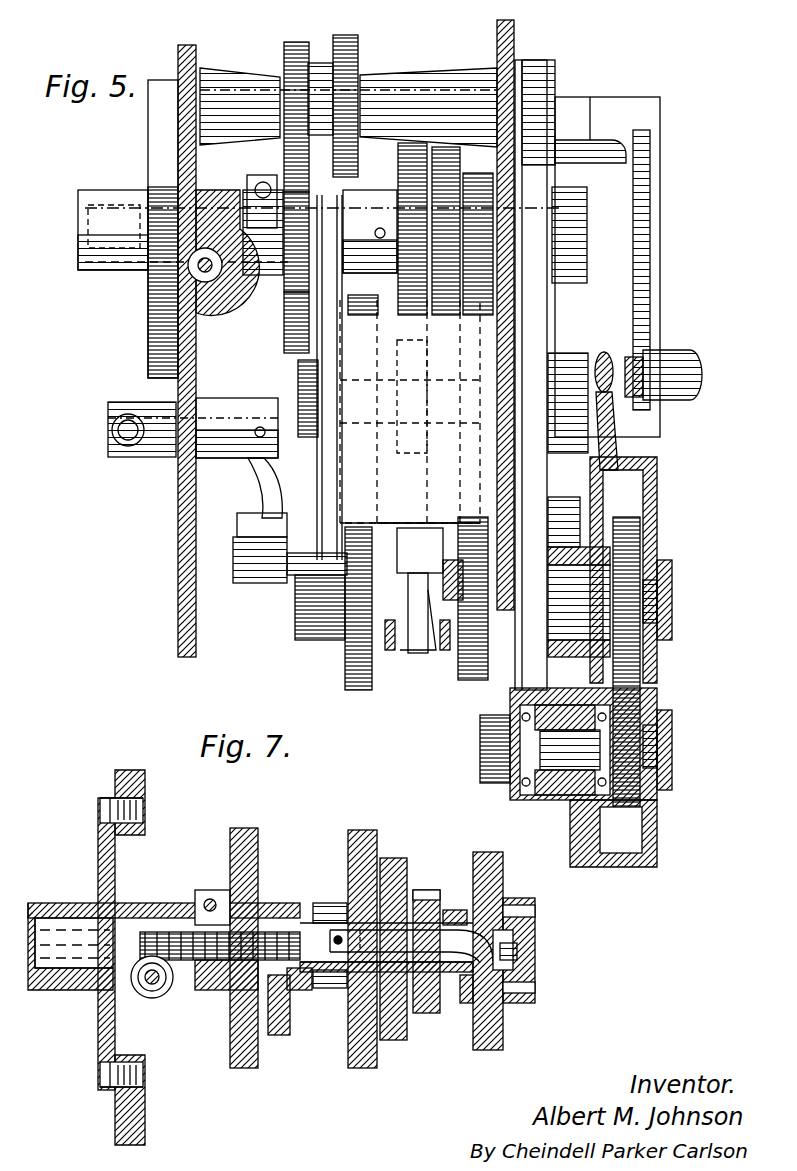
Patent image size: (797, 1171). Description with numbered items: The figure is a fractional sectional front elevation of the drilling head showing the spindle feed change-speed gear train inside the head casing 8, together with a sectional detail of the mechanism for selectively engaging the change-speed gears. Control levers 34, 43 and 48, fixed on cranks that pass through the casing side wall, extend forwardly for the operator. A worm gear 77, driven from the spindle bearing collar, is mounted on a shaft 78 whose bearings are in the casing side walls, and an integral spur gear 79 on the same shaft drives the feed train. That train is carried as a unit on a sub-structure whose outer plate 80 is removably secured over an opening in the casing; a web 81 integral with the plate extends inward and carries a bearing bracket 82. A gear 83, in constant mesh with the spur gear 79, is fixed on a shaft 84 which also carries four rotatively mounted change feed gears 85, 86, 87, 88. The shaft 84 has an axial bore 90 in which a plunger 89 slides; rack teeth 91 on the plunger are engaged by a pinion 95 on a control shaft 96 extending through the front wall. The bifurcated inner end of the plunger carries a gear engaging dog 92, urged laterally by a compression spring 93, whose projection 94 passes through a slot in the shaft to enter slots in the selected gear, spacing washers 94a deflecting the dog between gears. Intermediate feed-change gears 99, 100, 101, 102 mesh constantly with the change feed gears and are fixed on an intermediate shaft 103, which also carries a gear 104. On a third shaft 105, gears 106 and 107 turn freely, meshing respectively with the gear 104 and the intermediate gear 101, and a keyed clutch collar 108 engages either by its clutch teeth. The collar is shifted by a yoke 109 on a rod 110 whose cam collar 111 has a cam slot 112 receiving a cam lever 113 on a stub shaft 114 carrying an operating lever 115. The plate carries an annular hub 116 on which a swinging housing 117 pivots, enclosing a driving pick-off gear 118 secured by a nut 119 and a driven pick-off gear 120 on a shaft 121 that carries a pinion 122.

In FIG. 5, the head casing 8 is at (180, 54).
In FIG. 7, the head casing 8 is at (98, 861).
In FIG. 5, the control lever 34 is at (650, 256).
In FIG. 5, the control lever 43 is at (702, 372).
In FIG. 5, the control lever 48 is at (605, 352).
In FIG. 5, the worm gear 77 is at (359, 50).
In FIG. 5, the shaft 78 is at (229, 75).
In FIG. 5, the spur gear 79 is at (295, 42).
In FIG. 5, the plate 80 is at (542, 233).
In FIG. 7, the plate 80 is at (503, 1040).
In FIG. 5, the web 81 is at (350, 328).
In FIG. 5, the bearing bracket 82 is at (300, 306).
In FIG. 7, the bearing bracket 82 is at (280, 1035).
In FIG. 5, the gear 83 is at (285, 345).
In FIG. 7, the gear 83 is at (258, 830).
In FIG. 5, the shaft 84 is at (375, 215).
In FIG. 7, the shaft 84 is at (305, 988).
In FIG. 5, the change feed gear 85 is at (410, 150).
In FIG. 7, the change feed gear 85 is at (363, 832).
In FIG. 5, the change feed gear 86 is at (445, 155).
In FIG. 7, the change feed gear 86 is at (395, 860).
In FIG. 5, the change feed gear 87 is at (512, 150).
In FIG. 7, the change feed gear 87 is at (424, 892).
In FIG. 5, the change feed gear 88 is at (580, 182).
In FIG. 7, the change feed gear 88 is at (455, 1000).
In FIG. 5, the plunger 89 is at (116, 205).
In FIG. 7, the plunger 89 is at (292, 905).
In FIG. 7, the bore 90 is at (218, 985).
In FIG. 7, the rack teeth 91 is at (165, 932).
In FIG. 7, the gear engaging dog 92 is at (400, 985).
In FIG. 7, the compression spring 93 is at (322, 928).
In FIG. 7, the gear engaging projection 94 is at (455, 910).
In FIG. 7, the spacing washers 94a is at (412, 910).
In FIG. 7, the pinion 95 is at (156, 998).
In FIG. 5, the control shaft 96 is at (200, 268).
In FIG. 7, the control shaft 96 is at (150, 977).
In FIG. 5, the intermediate feed-change gear 99 is at (406, 472).
In FIG. 5, the intermediate feed-change gear 100 is at (407, 515).
In FIG. 5, the intermediate feed-change gear 101 is at (470, 500).
In FIG. 5, the intermediate feed-change gear 102 is at (528, 505).
In FIG. 5, the intermediate shaft 103 is at (304, 388).
In FIG. 5, the gear 104 is at (365, 478).
In FIG. 5, the third shaft 105 is at (310, 615).
In FIG. 5, the gear 106 is at (350, 690).
In FIG. 5, the gear 107 is at (470, 680).
In FIG. 5, the clutch collar 108 is at (418, 652).
In FIG. 5, the shifting yoke 109 is at (432, 655).
In FIG. 5, the rod 110 is at (295, 575).
In FIG. 5, the cam collar 111 is at (242, 585).
In FIG. 5, the cam slot 112 is at (286, 520).
In FIG. 5, the cam lever 113 is at (248, 505).
In FIG. 5, the stub shaft 114 is at (210, 425).
In FIG. 5, the operating lever 115 is at (112, 437).
In FIG. 5, the annular hub 116 is at (635, 632).
In FIG. 5, the swinging housing 117 is at (658, 515).
In FIG. 5, the driving pick-off gear 118 is at (640, 555).
In FIG. 5, the nut 119 is at (657, 585).
In FIG. 5, the driven pick-off gear 120 is at (640, 807).
In FIG. 5, the shaft 121 is at (558, 798).
In FIG. 5, the pinion 122 is at (496, 785).